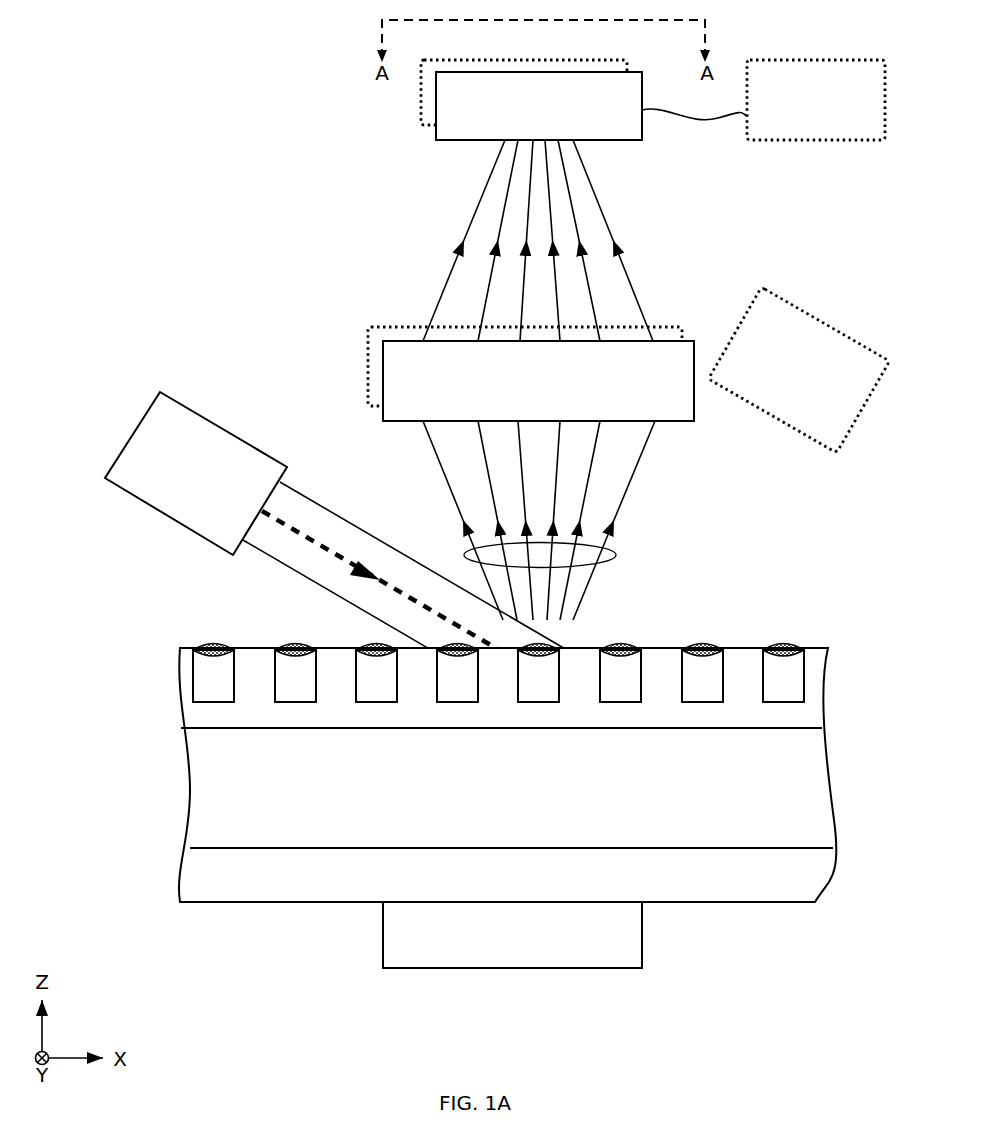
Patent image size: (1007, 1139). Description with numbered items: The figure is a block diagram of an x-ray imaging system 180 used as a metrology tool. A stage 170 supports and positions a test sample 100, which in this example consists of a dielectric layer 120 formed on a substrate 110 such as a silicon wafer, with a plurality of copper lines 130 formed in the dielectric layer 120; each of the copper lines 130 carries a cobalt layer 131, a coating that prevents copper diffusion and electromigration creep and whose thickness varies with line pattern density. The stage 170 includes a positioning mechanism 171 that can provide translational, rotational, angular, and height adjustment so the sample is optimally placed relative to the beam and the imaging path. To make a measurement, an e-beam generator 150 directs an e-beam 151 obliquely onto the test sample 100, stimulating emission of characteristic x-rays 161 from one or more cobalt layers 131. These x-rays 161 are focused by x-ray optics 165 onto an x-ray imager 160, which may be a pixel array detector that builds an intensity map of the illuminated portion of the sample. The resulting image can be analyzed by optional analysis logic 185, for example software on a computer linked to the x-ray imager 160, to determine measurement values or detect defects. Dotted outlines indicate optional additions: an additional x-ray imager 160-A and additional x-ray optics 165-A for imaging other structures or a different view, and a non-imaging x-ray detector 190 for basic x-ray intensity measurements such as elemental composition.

The x-ray imaging system 180 is at (100, 62).
The x-ray imager 160 is at (539, 106).
The additional x-ray imager 160-A is at (420, 100).
The analysis logic 185 is at (763, 100).
The x-ray optics 165 is at (538, 381).
The additional x-ray optics 165-A is at (395, 327).
The non-imaging x-ray detector 190 is at (798, 370).
The e-beam generator 150 is at (195, 410).
The e-beam 151 is at (347, 516).
The characteristic x-rays 161 is at (616, 555).
The test sample 100 is at (453, 714).
The dielectric layer 120 is at (741, 667).
The substrate 110 is at (507, 788).
The stage 170 is at (715, 873).
The copper lines 130 is at (297, 687).
The cobalt layer 131 is at (510, 565).
The positioning mechanism 171 is at (512, 935).